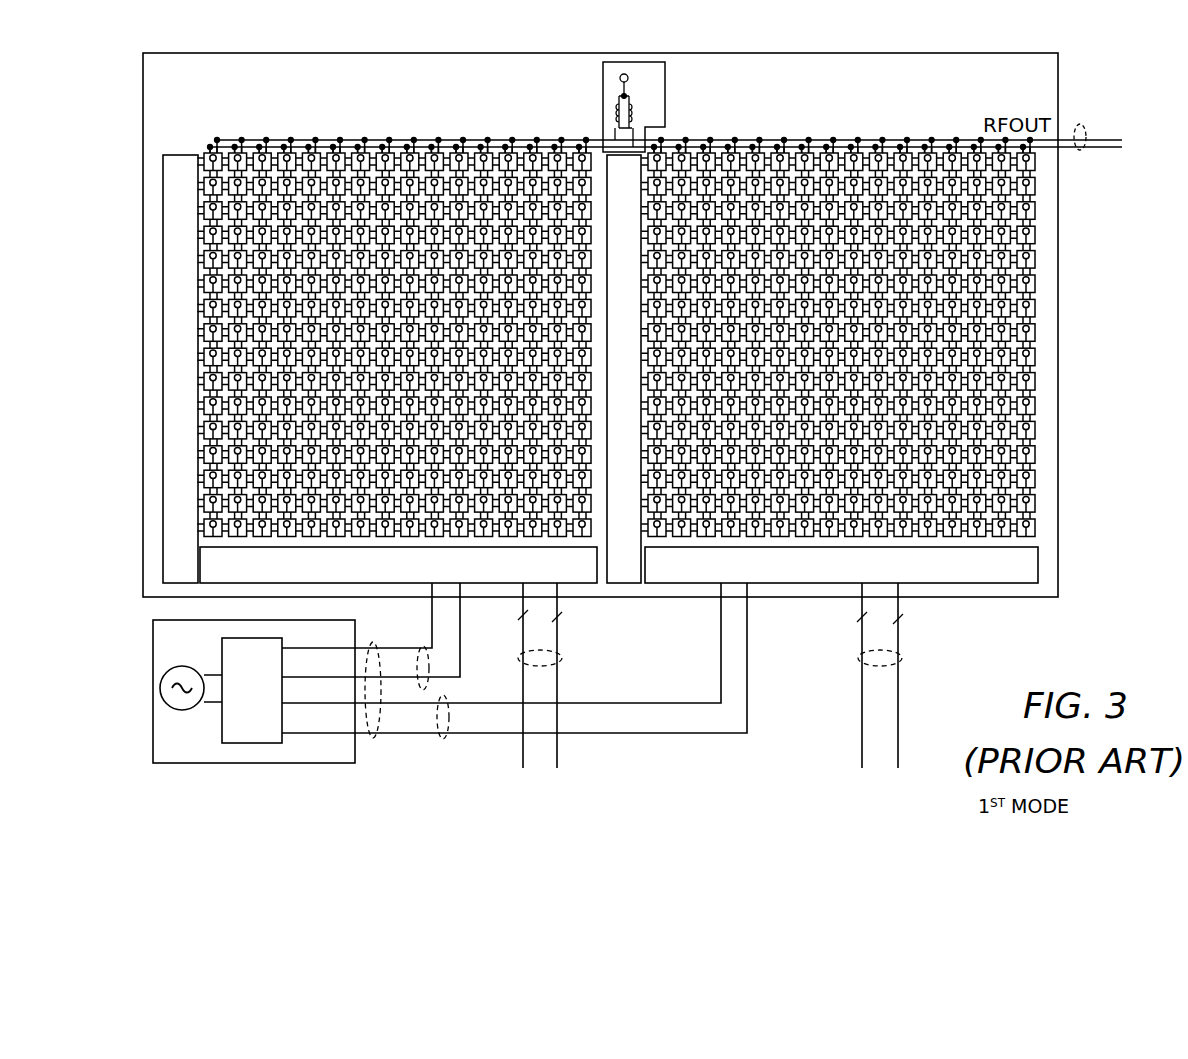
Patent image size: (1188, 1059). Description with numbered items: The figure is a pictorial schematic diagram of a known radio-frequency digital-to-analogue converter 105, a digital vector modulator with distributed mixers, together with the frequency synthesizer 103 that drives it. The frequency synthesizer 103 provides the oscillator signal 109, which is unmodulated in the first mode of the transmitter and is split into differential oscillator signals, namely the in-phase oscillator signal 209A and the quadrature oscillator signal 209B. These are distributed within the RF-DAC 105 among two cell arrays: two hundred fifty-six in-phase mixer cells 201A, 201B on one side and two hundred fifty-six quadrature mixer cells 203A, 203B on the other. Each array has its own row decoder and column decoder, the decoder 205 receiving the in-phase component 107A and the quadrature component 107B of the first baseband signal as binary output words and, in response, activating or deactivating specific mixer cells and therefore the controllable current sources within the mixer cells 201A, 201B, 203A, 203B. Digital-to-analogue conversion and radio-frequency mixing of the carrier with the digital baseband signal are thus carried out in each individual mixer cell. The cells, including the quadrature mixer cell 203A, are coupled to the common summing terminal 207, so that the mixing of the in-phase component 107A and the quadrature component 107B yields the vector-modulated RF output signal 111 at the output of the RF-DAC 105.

The frequency synthesizer 103 is at (178, 763).
The radio-frequency digital-to-analogue converter 105 is at (1058, 57).
The in-phase component 107A is at (562, 660).
The quadrature component 107B is at (902, 660).
The oscillator signal 109 is at (372, 738).
The vector-modulated RF output signal 111 is at (1082, 150).
The in-phase mixer cell 201A is at (208, 148).
The in-phase mixer cell 201B is at (239, 147).
The quadrature mixer cell 203A is at (669, 140).
The quadrature mixer cell 203B is at (700, 147).
The decoder 205 is at (163, 550).
The common summing terminal 207 is at (603, 70).
The in-phase oscillator signal 209A is at (443, 742).
The quadrature oscillator signal 209B is at (428, 681).